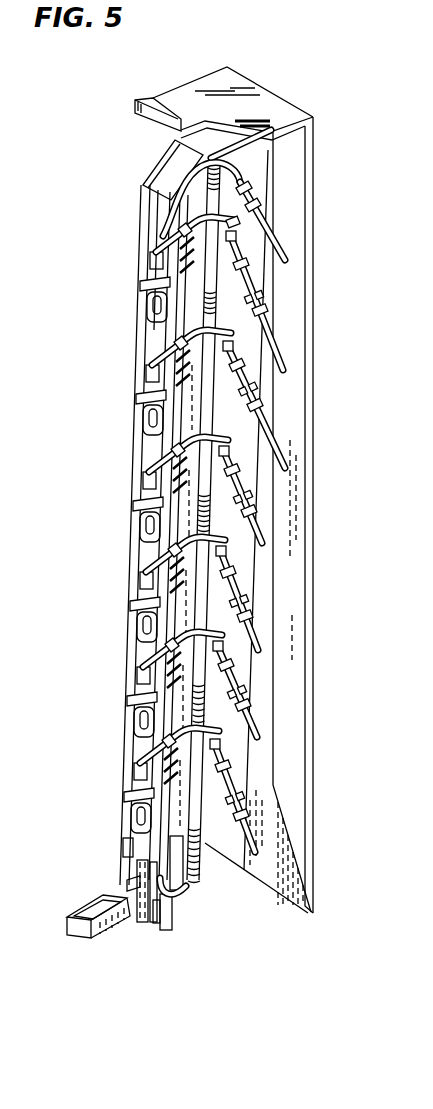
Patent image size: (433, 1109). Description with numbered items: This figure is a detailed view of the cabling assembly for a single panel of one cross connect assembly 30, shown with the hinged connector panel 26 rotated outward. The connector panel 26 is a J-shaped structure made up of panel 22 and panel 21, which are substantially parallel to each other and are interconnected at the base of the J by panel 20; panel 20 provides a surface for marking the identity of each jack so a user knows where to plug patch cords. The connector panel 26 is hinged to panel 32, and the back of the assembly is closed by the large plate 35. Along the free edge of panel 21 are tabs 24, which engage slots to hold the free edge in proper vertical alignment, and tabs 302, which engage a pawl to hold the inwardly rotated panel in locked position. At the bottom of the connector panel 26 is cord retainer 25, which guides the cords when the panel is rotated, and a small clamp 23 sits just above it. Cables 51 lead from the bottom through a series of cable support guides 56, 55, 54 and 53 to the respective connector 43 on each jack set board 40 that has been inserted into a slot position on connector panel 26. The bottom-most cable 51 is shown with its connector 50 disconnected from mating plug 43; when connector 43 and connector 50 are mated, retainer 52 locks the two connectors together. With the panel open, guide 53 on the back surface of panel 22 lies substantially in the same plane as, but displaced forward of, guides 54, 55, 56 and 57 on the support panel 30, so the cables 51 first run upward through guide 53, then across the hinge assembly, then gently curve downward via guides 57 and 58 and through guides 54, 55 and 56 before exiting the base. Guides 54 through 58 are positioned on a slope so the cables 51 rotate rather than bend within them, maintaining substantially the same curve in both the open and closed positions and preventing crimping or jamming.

The panel 20 is at (183, 160).
The panel 21 is at (163, 176).
The panel 22 is at (183, 813).
The bottom clamp 23 is at (128, 882).
The tabs 24 is at (137, 373).
The cord retainer 25 is at (106, 930).
The connector panel 26 is at (124, 146).
The cross connect assembly 30 is at (270, 100).
The panel 32 is at (219, 843).
The panel 35 is at (297, 450).
The jack set board 40 is at (153, 923).
The connector 43 is at (134, 922).
The connector 50 is at (146, 256).
The cables 51 is at (284, 246).
The retainer 52 is at (148, 278).
The cable support guide 53 is at (172, 222).
The cable support guide 54 is at (248, 265).
The cable support guide 55 is at (258, 290).
The cable support guide 56 is at (259, 308).
The guide 57 is at (232, 220).
The guide 58 is at (237, 236).
The tabs 302 is at (136, 413).